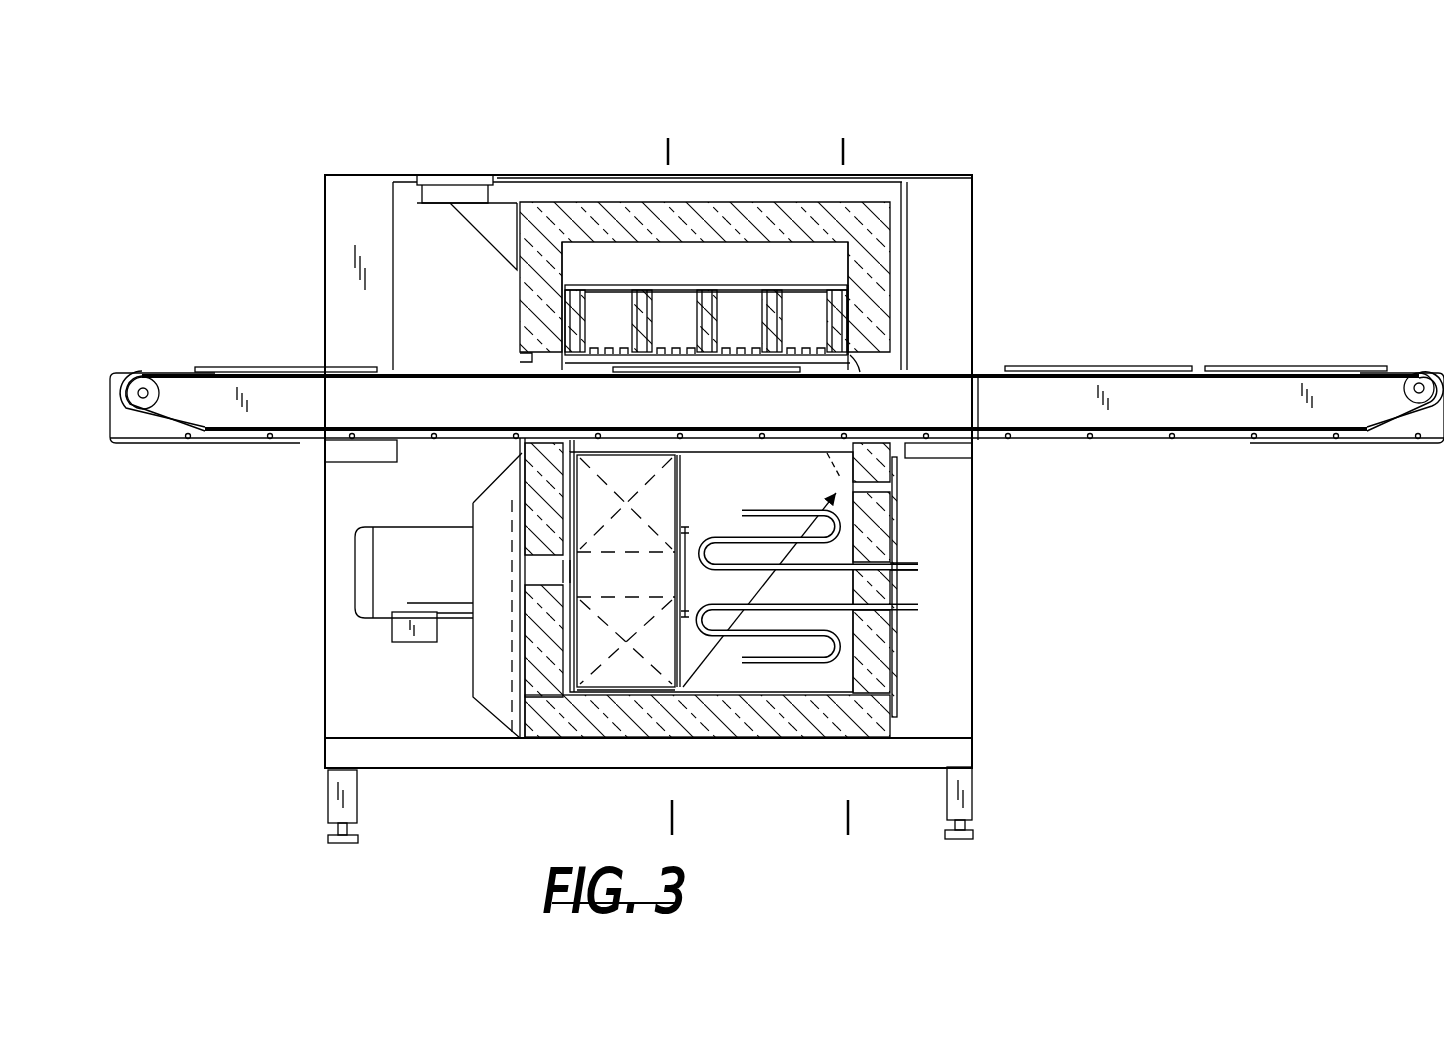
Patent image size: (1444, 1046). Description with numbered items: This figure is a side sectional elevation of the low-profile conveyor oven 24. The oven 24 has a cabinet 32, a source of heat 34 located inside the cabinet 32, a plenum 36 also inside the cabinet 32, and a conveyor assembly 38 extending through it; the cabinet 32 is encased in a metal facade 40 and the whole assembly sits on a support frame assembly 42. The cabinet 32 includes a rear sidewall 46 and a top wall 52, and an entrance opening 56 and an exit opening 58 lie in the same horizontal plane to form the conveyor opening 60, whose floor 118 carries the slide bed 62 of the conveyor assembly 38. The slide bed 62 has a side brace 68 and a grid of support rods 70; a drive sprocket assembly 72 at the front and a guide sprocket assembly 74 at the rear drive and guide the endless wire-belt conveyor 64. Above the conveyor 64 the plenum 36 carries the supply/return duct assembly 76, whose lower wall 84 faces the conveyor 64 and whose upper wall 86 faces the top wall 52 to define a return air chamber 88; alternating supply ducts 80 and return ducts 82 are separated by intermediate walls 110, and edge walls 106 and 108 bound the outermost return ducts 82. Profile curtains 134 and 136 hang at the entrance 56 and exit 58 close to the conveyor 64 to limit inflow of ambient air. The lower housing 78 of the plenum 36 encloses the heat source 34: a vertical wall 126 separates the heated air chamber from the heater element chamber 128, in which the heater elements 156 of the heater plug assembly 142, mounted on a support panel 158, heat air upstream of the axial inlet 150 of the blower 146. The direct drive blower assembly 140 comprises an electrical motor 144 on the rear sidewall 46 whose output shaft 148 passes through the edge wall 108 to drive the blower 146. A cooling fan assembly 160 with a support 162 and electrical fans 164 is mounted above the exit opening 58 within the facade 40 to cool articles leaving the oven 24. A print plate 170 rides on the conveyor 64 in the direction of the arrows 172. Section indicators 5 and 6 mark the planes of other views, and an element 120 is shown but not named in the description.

The conveyor oven 24 is at (648, 126).
The cabinet 32 is at (902, 670).
The source of heat 34 is at (798, 487).
The plenum 36 is at (578, 496).
The conveyor assembly 38 is at (1340, 449).
The metal facade 40 is at (973, 550).
The support frame assembly 42 is at (968, 754).
The rear sidewall 46 is at (562, 298).
The top wall 52 is at (598, 242).
The entrance opening 56 is at (893, 363).
The exit opening 58 is at (530, 360).
The conveyor opening 60 is at (870, 357).
The slide bed 62 is at (135, 437).
The endless conveyor 64 is at (180, 370).
The side brace 68 is at (1400, 443).
The support rods 70 is at (1182, 440).
The drive sprocket assembly 72 is at (1419, 373).
The guide sprocket assembly 74 is at (143, 377).
The supply/return duct assembly 76 is at (829, 280).
The housing 78 is at (705, 594).
The supply ducts 80 is at (800, 273).
The return ducts 82 is at (576, 292).
The lower wall 84 is at (826, 360).
The upper wall 86 is at (622, 292).
The return air chamber 88 is at (703, 272).
The first edge wall 106 is at (837, 318).
The second edge wall 108 is at (578, 502).
The intermediate walls 110 is at (655, 310).
The floor 118 is at (778, 455).
The fan housing 120 is at (626, 626).
The vertical wall 126 is at (684, 482).
The heater element chamber 128 is at (697, 689).
The profile curtain 134 is at (858, 358).
The profile curtain 136 is at (533, 368).
The direct drive blower assembly 140 is at (462, 624).
The heater plug assembly 142 is at (928, 572).
The electrical motor 144 is at (355, 583).
The blower 146 is at (612, 692).
The output shaft 148 is at (547, 563).
The axial inlet 150 is at (688, 537).
The heater elements 156 is at (805, 655).
The support panel 158 is at (899, 634).
The cooling fan assembly 160 is at (512, 196).
The support 162 is at (480, 235).
The electrical fans 164 is at (450, 176).
The print plate 170 is at (248, 367).
The arrows 172 is at (1178, 350).
The section line 5 is at (856, 147).
The section line 6 is at (681, 147).